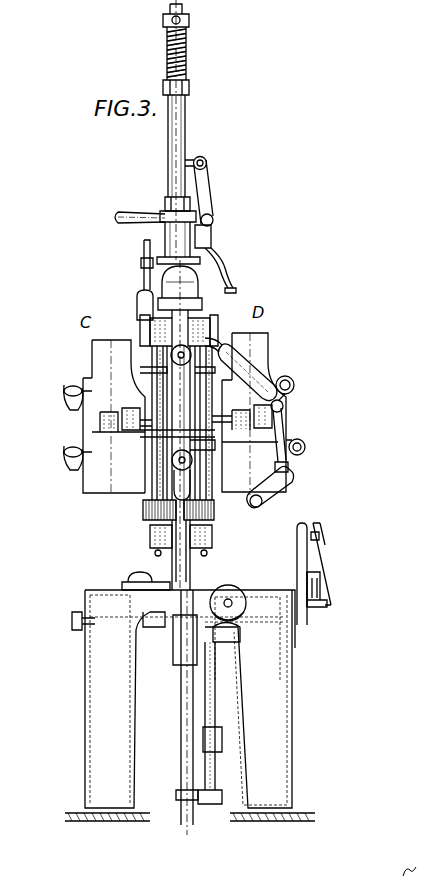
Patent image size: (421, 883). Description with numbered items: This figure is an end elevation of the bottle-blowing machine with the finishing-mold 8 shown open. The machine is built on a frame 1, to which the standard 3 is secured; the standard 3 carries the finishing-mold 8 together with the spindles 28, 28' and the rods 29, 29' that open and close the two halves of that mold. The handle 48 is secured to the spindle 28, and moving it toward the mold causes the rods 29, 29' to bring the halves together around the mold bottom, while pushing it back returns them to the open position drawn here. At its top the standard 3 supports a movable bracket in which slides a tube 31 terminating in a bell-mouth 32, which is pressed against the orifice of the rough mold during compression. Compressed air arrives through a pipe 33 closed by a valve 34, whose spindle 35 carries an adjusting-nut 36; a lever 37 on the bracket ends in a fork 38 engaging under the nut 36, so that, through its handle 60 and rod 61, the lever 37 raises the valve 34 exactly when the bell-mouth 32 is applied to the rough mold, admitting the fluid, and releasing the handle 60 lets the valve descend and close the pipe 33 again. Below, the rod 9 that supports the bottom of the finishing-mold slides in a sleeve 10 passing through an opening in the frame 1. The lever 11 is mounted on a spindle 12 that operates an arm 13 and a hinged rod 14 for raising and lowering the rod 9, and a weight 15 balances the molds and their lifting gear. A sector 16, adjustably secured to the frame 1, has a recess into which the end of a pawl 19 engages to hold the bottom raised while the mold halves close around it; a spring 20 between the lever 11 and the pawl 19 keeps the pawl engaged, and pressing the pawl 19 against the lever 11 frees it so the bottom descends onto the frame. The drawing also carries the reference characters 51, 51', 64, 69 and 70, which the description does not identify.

The frame 1 is at (88, 715).
The standard 3 is at (152, 556).
The finishing-mold 8 is at (274, 350).
The rod 9 is at (182, 688).
The sleeve 10 is at (178, 645).
The lever-arm 11 is at (297, 532).
The spindle 12 is at (302, 656).
The arm 13 is at (214, 678).
The rod 14 is at (214, 773).
The weight 15 is at (247, 590).
The sector 16 is at (308, 622).
The pawl 19 is at (326, 551).
The spring 20 is at (320, 534).
The spindle 28 is at (214, 506).
The spindle 28' is at (144, 507).
The rod 29 is at (245, 433).
The rod 29' is at (122, 434).
The tube 31 is at (169, 135).
The bell-mouth 32 is at (188, 293).
The pipe 33 is at (150, 328).
The valve 34 is at (137, 308).
The valve spindle 35 is at (143, 283).
The adjusting-nut 36 is at (141, 263).
The lever 37 is at (213, 260).
The fork 38 is at (201, 283).
The handle 48 is at (241, 369).
The block 51 is at (221, 538).
The block 51' is at (139, 538).
The handle 60 is at (116, 217).
The rod 61 is at (208, 188).
The spring 64 is at (167, 50).
The knob 69 is at (74, 433).
The lever 70 is at (264, 498).